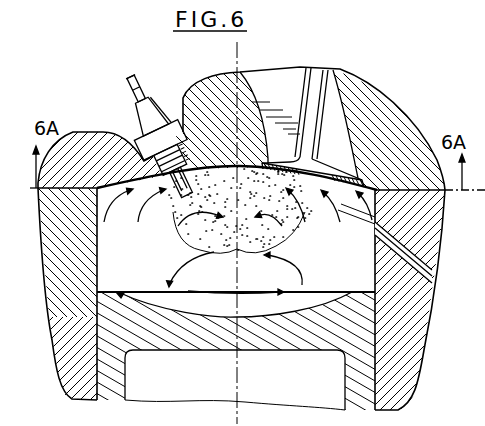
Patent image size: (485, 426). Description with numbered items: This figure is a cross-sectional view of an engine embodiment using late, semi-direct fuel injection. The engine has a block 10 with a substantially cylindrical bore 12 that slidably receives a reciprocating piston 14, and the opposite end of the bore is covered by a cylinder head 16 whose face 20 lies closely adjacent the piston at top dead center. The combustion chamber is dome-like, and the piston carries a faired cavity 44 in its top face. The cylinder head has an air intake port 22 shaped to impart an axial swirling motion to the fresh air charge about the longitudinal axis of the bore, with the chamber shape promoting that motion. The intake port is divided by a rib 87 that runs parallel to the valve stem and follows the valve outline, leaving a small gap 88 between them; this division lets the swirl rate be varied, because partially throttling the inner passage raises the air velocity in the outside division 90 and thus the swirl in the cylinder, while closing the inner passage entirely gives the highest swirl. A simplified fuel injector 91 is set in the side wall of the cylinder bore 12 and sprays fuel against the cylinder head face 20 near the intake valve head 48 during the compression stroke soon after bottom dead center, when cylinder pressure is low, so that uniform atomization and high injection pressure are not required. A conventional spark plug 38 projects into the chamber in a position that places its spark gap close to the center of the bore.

The block 10 is at (417, 352).
The cylindrical bore 12 is at (373, 383).
The piston 14 is at (181, 337).
The cylinder head 16 is at (368, 107).
The cylinder head face 20 is at (108, 216).
The air intake port 22 is at (340, 167).
The spark plug 38 is at (148, 110).
The faired cavity 44 is at (152, 307).
The intake valve head 48 is at (338, 186).
The rib 87 is at (270, 80).
The gap 88 is at (310, 158).
The outside division 90 is at (268, 240).
The fuel injector 91 is at (425, 262).